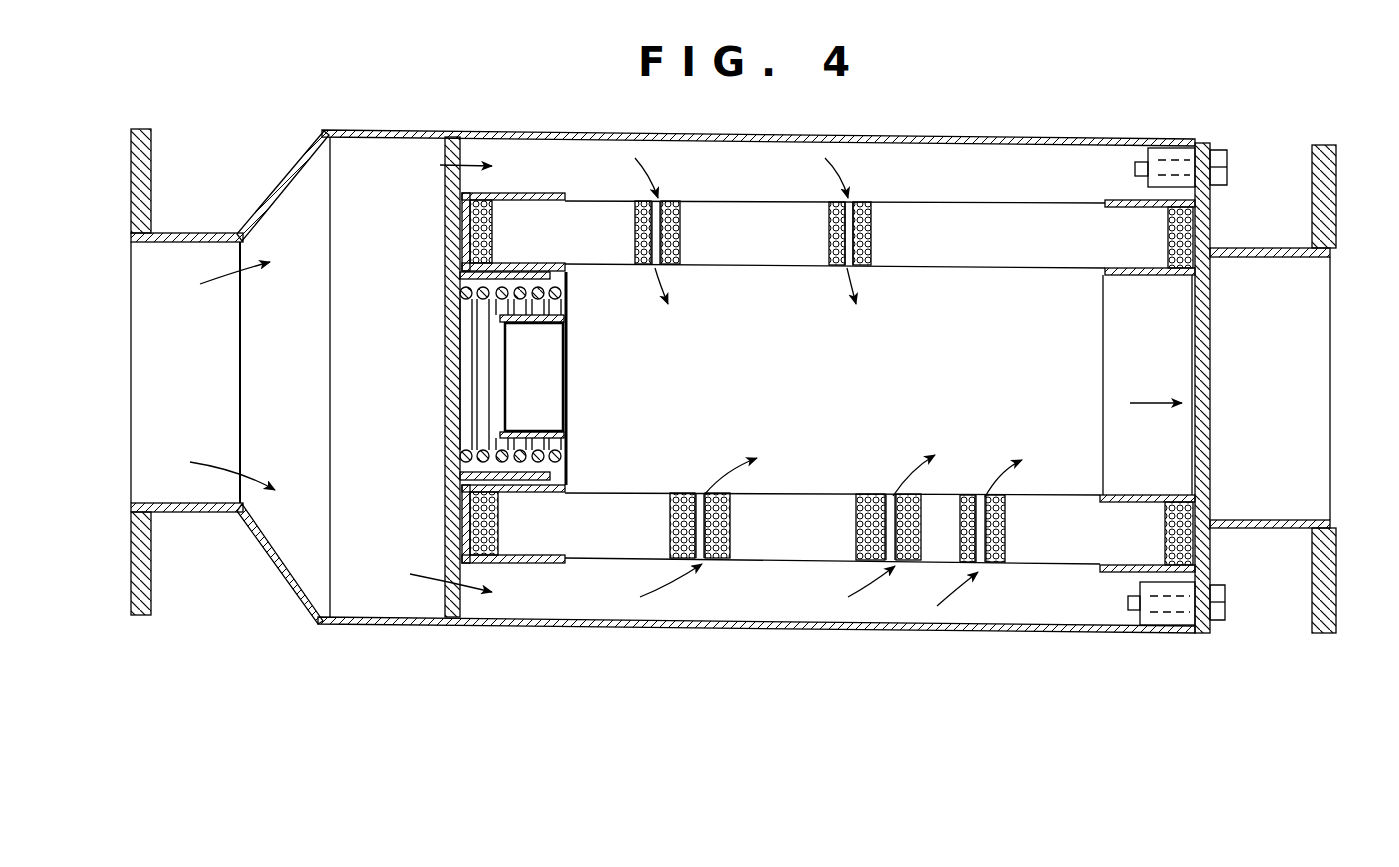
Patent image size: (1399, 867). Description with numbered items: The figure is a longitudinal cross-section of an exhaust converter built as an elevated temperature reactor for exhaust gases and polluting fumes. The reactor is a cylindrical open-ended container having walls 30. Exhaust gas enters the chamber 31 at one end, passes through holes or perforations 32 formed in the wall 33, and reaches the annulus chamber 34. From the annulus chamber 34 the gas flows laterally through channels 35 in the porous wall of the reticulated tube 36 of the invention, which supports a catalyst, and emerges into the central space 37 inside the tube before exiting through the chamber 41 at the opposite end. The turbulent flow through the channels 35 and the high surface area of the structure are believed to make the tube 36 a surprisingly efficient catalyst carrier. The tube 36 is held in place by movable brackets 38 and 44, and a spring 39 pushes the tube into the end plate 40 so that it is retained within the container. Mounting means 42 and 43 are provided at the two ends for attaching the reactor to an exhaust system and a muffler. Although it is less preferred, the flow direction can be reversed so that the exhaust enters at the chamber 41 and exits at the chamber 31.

The walls 30 is at (762, 632).
The chamber 31 is at (199, 383).
The holes or perforations 32 is at (460, 163).
The wall 33 is at (444, 498).
The annulus chamber 34 is at (1010, 191).
The channels 35 is at (652, 252).
The tube 36 is at (746, 196).
The central space 37 is at (933, 391).
The movable bracket 38 is at (552, 192).
The spring 39 is at (485, 396).
The end plate 40 is at (1213, 229).
The chamber 41 is at (1321, 437).
The mounting means 42 is at (152, 188).
The mounting means 43 is at (1340, 574).
The movable bracket 44 is at (1172, 274).